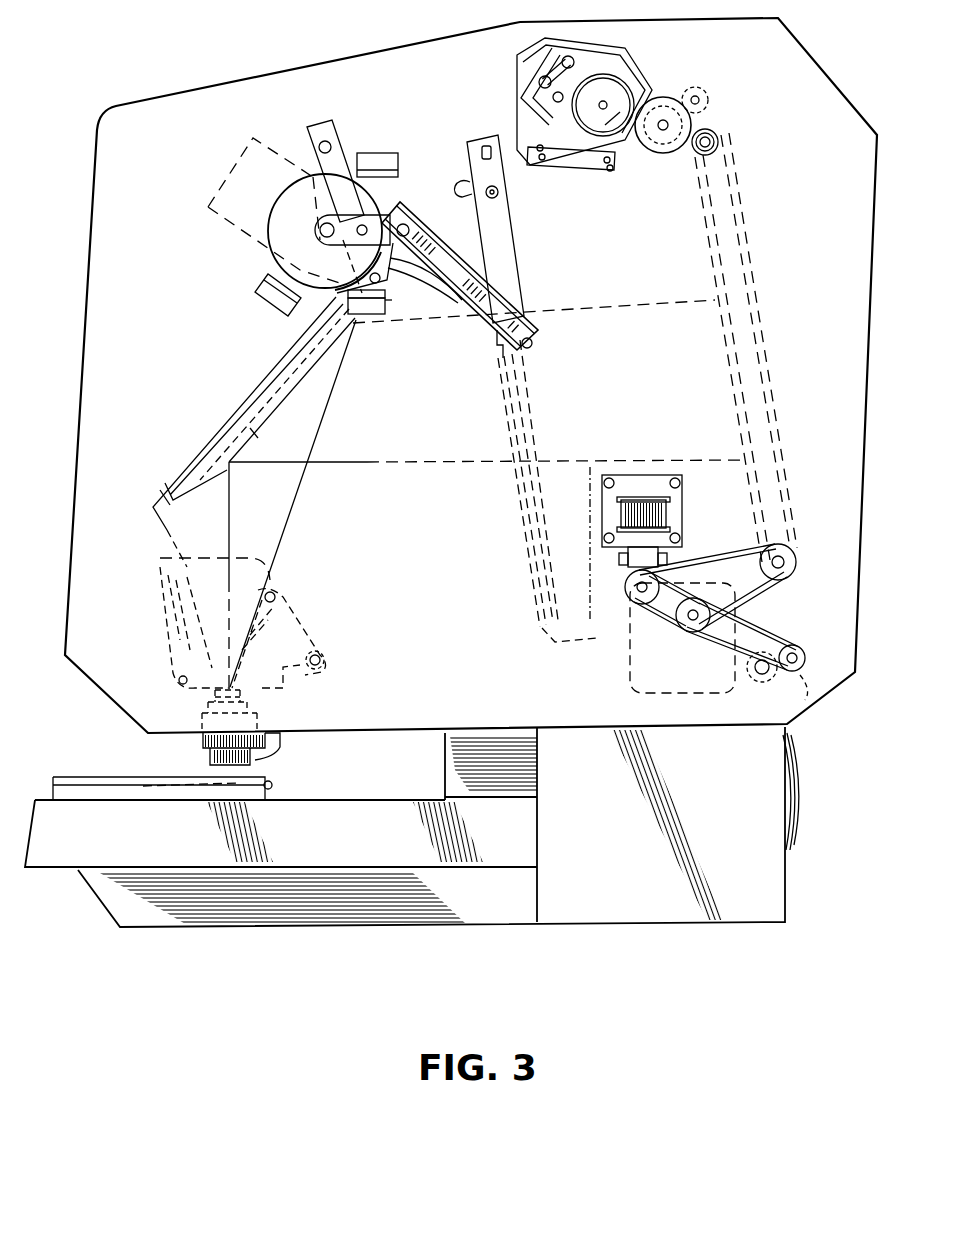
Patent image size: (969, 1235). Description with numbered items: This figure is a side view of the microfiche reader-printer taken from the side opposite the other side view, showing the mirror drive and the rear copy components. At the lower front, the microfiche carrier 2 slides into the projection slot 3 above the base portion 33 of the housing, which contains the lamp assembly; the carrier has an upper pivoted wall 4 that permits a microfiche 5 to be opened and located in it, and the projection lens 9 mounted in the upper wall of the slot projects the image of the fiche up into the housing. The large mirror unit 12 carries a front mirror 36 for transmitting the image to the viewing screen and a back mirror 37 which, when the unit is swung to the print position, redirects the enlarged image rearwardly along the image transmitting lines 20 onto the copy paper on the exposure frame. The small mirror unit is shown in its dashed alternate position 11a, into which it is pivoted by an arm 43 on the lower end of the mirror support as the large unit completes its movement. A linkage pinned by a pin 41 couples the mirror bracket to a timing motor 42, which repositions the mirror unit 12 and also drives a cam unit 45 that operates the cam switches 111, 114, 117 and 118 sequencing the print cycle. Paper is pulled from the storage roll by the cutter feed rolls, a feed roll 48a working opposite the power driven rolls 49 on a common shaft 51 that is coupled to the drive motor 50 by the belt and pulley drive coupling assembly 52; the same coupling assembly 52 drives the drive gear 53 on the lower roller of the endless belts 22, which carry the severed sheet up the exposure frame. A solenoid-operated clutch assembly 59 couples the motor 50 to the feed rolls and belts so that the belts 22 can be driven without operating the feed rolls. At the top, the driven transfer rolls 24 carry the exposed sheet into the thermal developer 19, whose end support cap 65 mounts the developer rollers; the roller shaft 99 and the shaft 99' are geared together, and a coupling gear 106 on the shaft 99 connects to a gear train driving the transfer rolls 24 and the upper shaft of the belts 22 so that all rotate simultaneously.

The microfiche carrier 2 is at (158, 806).
The projection slot 3 is at (138, 752).
The upper pivoted wall 4 is at (583, 620).
The microfiche 5 is at (240, 783).
The projection lens 9 is at (205, 745).
The alternate position of small mirror unit 11a is at (172, 628).
The large mirror unit 12 is at (240, 390).
The thermal developer 19 is at (652, 59).
The image transmitting lines 20 is at (380, 465).
The driven belts 22 is at (752, 286).
The driven transfer rolls 24 is at (722, 99).
The base portion 33 is at (371, 845).
The front mirror 36 is at (200, 447).
The back mirror 37 is at (253, 433).
The pin 41 is at (487, 330).
The timing motor 42 is at (232, 184).
The arm 43 is at (168, 540).
The cam unit 45 is at (288, 255).
The roller 48a is at (760, 676).
The power driven cutter feed rolls 49 is at (812, 702).
The drive motor 50 is at (640, 678).
The common shaft 51 is at (803, 645).
The belt and pulley drive coupling assembly 52 is at (718, 656).
The drive gear 53 is at (797, 562).
The solenoid-operated clutch assembly 59 is at (641, 468).
The end support cap 65 is at (562, 62).
The driven shaft 99 is at (603, 68).
The roller shaft 99' is at (514, 102).
The coupling gear 106 is at (601, 125).
The cam operated switch 111 is at (265, 305).
The cam operated switch 114 is at (368, 325).
The cam operated switch 117 is at (394, 308).
The cam operated switch 118 is at (391, 148).